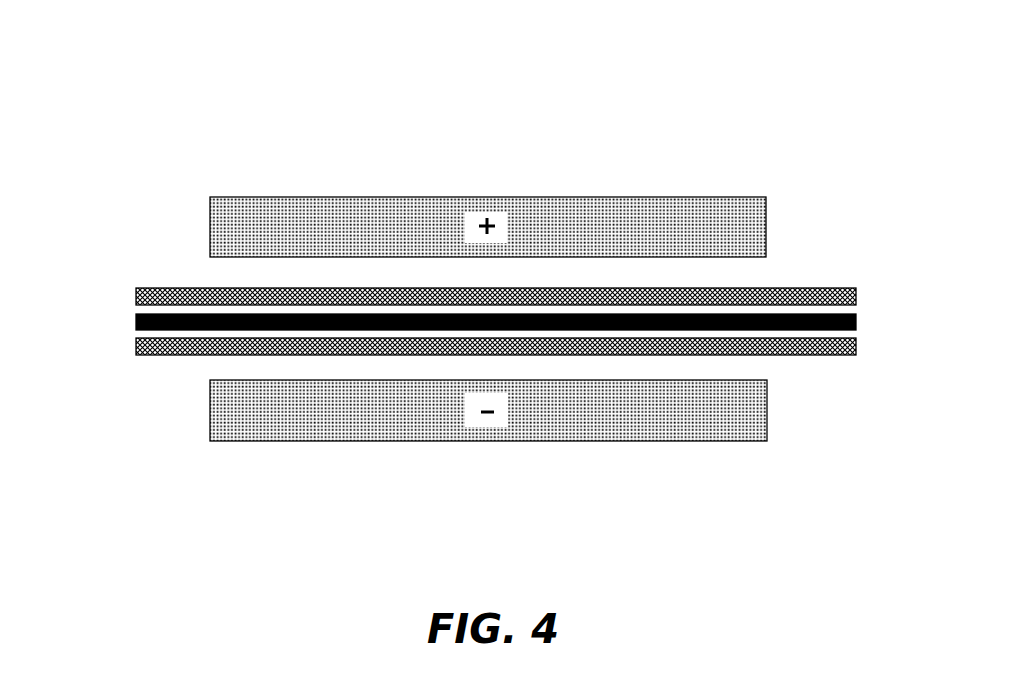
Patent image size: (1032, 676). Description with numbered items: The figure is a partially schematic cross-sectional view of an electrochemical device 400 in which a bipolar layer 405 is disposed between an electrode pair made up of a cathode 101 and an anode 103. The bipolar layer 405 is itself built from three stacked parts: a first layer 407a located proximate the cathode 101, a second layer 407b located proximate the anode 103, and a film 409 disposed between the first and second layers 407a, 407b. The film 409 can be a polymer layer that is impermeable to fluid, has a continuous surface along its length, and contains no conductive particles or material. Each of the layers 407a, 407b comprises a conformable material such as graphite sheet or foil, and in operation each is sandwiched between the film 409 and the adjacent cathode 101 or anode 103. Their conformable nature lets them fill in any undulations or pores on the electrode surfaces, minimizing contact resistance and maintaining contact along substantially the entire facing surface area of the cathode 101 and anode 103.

The electrochemical device 400 is at (143, 105).
The cathode 101 is at (263, 197).
The anode 103 is at (210, 412).
The bipolar layer 405 is at (60, 263).
The first layer 407a is at (856, 296).
The second layer 407b is at (856, 347).
The film 409 is at (136, 321).